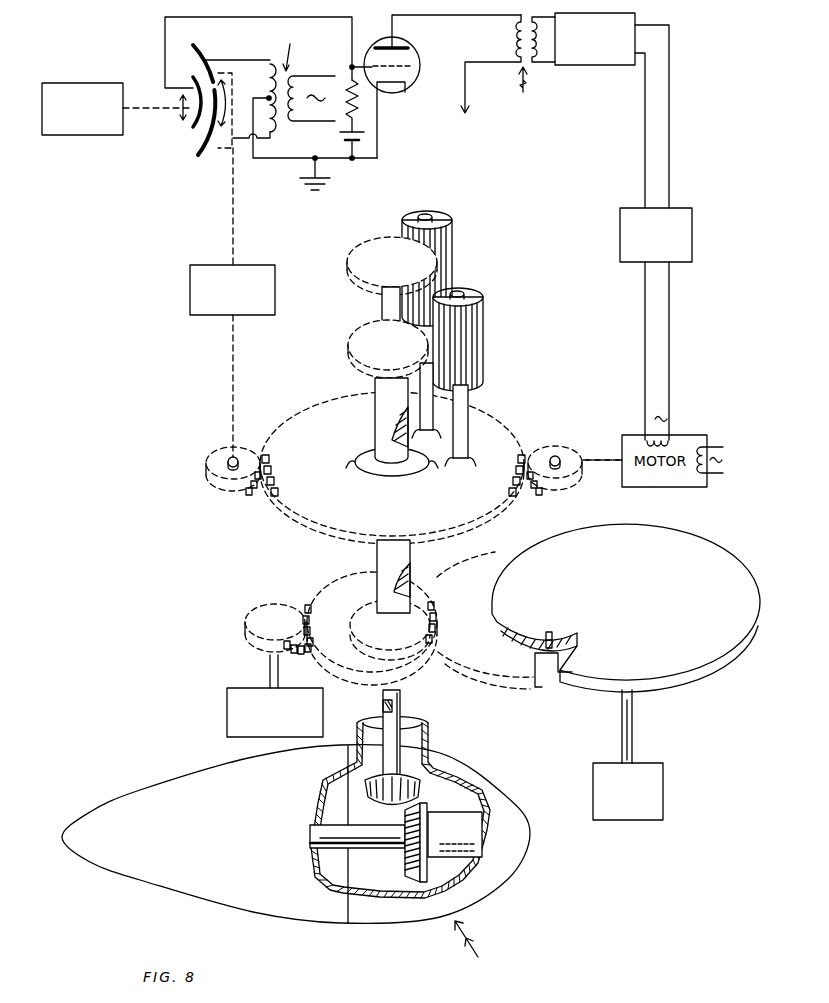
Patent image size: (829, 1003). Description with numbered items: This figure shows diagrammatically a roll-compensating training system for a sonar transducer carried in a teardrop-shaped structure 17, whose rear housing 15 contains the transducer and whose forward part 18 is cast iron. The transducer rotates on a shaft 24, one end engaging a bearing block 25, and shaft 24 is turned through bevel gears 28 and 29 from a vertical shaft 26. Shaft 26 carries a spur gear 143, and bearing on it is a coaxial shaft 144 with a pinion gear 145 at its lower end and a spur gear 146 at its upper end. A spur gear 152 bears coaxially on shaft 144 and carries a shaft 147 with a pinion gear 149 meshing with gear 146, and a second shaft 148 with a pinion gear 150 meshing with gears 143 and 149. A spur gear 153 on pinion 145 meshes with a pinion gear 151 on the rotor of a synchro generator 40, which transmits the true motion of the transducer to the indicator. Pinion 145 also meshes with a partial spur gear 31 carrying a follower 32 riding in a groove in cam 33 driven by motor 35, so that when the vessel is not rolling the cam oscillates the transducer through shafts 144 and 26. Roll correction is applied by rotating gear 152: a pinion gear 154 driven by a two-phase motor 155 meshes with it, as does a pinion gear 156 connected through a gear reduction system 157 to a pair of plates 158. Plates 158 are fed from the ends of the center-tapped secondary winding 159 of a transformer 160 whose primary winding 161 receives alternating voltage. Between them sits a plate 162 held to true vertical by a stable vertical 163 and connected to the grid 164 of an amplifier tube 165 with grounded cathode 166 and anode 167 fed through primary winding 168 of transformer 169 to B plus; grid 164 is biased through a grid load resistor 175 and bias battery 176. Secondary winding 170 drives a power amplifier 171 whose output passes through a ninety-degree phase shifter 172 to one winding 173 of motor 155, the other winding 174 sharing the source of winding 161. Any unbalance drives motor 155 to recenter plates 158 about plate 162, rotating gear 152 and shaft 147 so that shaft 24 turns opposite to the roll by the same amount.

The housing 15 is at (263, 899).
The teardrop-shaped structure 17 is at (475, 950).
The forward part 18 is at (505, 877).
The shaft 24 is at (337, 841).
The bearing block 25 is at (448, 836).
The shaft 26 is at (384, 696).
The bevel gear 28 is at (380, 786).
The bevel gear 29 is at (411, 868).
The partial spur gear 31 is at (486, 568).
The follower 32 is at (548, 650).
The cam 33 is at (700, 551).
The motor 35 is at (656, 779).
The synchro generator 40 is at (227, 714).
The spur gear 143 is at (369, 249).
The coaxial shaft 144 is at (377, 561).
The pinion gear 145 is at (378, 629).
The spur gear 146 is at (360, 343).
The shaft 147 is at (467, 420).
The second shaft 148 is at (427, 427).
The pinion gear 149 is at (478, 321).
The pinion gear 150 is at (450, 256).
The pinion gear 151 is at (257, 627).
The spur gear 152 is at (420, 516).
The spur gear 153 is at (327, 611).
The pinion gear 154 is at (562, 452).
The two-phase motor 155 is at (625, 474).
The pinion gear 156 is at (223, 476).
The gear reduction system 157 is at (190, 290).
The plates 158 is at (193, 47).
The secondary winding 159 is at (272, 70).
The transformer 160 is at (298, 50).
The primary winding 161 is at (296, 90).
The plate 162 is at (192, 122).
The stable vertical 163 is at (63, 134).
The grid 164 is at (370, 64).
The amplifier tube 165 is at (421, 64).
The cathode 166 is at (398, 86).
The anode 167 is at (396, 50).
The primary winding 168 is at (516, 36).
The transformer 169 is at (523, 91).
The secondary winding 170 is at (535, 53).
The power amplifier 171 is at (615, 66).
The 90-degree phase shifter 172 is at (680, 207).
The winding 173 is at (678, 438).
The winding 174 is at (704, 447).
The grid load resistor 175 is at (356, 97).
The bias battery 176 is at (367, 142).